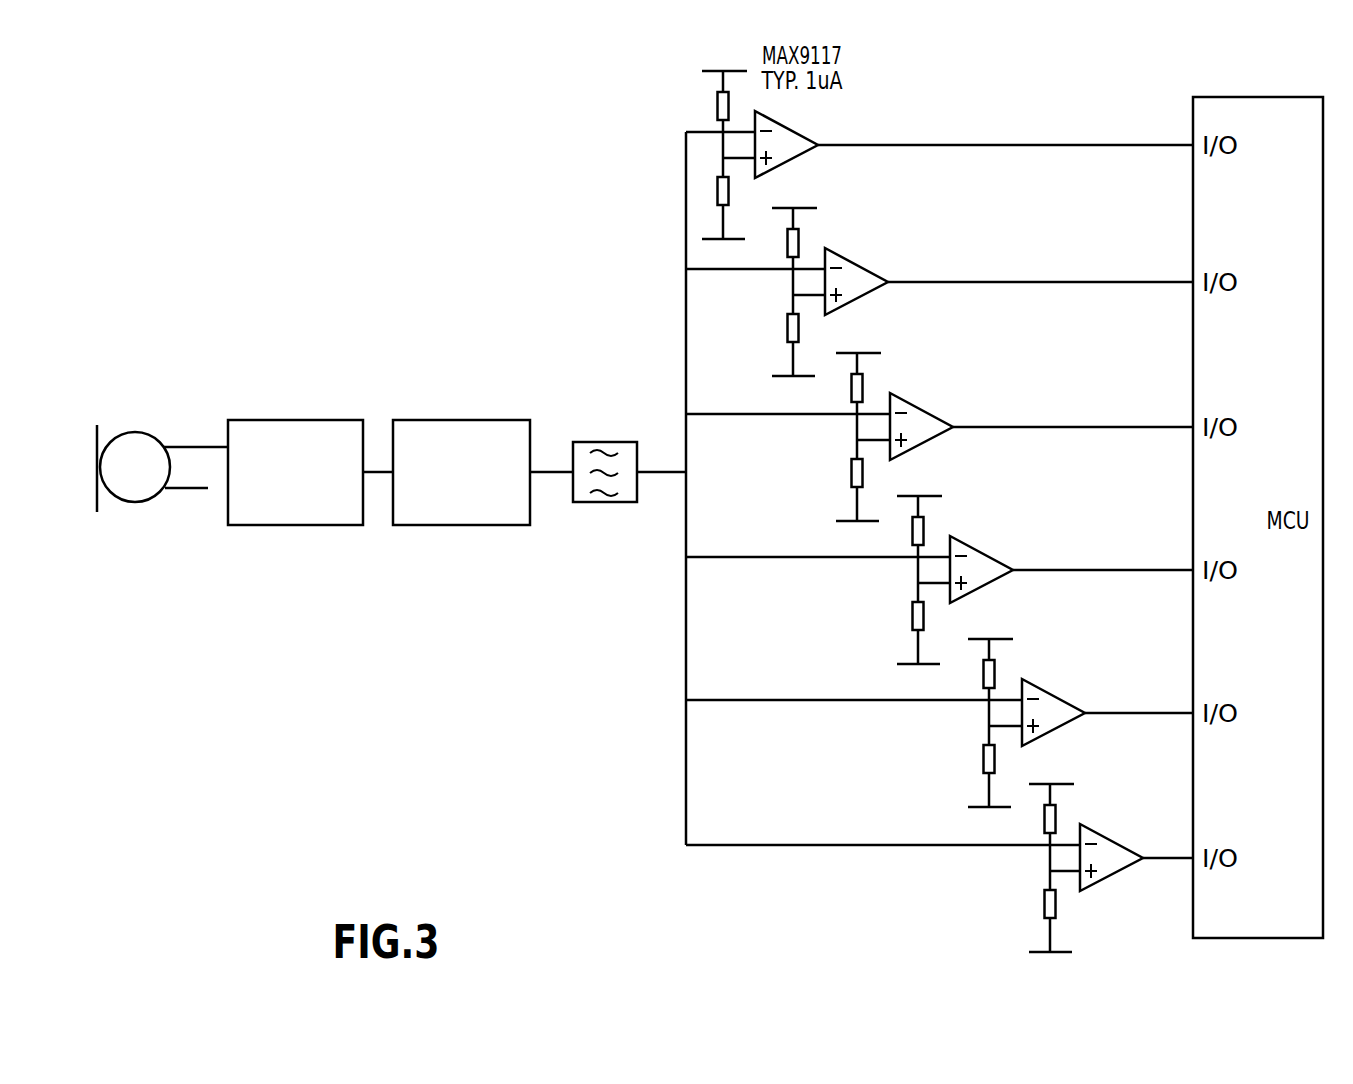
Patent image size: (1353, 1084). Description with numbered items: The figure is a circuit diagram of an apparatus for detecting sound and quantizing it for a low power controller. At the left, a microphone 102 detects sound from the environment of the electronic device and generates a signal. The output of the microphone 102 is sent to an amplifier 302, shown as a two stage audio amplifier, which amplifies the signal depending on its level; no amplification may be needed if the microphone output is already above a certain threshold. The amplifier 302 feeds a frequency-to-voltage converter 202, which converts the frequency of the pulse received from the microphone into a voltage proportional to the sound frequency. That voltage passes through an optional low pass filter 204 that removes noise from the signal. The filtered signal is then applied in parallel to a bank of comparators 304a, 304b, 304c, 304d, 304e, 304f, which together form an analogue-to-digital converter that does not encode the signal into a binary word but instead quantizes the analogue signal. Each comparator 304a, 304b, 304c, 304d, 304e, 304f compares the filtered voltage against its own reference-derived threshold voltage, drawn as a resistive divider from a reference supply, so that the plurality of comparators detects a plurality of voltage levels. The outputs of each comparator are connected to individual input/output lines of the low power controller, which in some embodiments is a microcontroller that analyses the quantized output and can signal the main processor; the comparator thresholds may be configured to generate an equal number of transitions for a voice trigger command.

The microphone 102 is at (138, 540).
The amplifier 302 is at (293, 525).
The frequency-to-voltage converter 202 is at (442, 525).
The low pass filter 204 is at (590, 502).
The comparator 304a is at (793, 128).
The comparator 304b is at (862, 268).
The comparator 304c is at (917, 408).
The comparator 304d is at (977, 550).
The comparator 304e is at (1047, 690).
The comparator 304f is at (1103, 877).